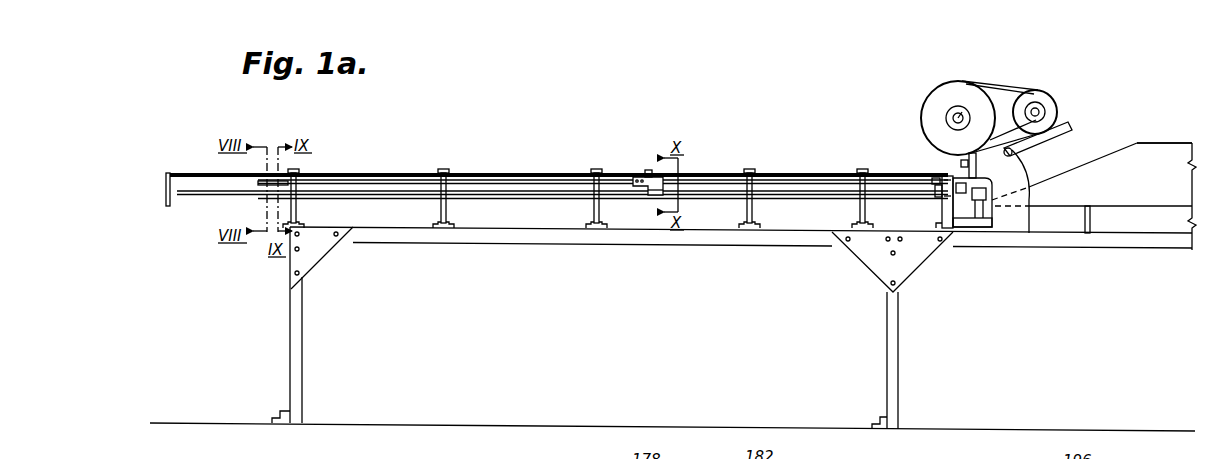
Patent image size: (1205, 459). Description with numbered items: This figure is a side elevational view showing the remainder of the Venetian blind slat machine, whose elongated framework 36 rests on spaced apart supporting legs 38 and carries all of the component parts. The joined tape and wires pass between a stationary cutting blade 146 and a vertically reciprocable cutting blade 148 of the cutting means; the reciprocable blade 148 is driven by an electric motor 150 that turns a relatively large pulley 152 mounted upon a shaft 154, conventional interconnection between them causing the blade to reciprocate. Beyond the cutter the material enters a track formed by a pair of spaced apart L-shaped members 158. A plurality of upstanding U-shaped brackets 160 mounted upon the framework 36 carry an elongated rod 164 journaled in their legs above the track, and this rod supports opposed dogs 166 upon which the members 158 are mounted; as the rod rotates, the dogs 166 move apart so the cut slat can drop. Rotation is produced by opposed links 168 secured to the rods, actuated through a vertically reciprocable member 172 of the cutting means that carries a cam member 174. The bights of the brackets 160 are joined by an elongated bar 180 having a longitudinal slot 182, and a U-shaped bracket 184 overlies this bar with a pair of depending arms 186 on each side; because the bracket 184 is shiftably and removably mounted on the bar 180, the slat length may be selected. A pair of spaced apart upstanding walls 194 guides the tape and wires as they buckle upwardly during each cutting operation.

The framework 36 is at (673, 287).
The supporting legs 38 is at (297, 327).
The stationary cutting blade 146 is at (987, 212).
The vertically reciprocable cutting blade 148 is at (977, 168).
The electric motor 150 is at (1040, 93).
The pulley 152 is at (942, 90).
The shaft 154 is at (961, 110).
The spaced apart members 158 is at (497, 199).
The U-shaped brackets 160 is at (297, 207).
The rod 164 is at (537, 178).
The dogs 166 is at (262, 186).
The links 168 is at (955, 205).
The vertically reciprocable member 172 is at (960, 163).
The cam member 174 is at (932, 180).
The elongated bar 180 is at (403, 175).
The longitudinal slot 182 is at (340, 174).
The U-shaped bracket 184 is at (647, 170).
The arms 186 is at (656, 196).
The upstanding walls 194 is at (1151, 142).